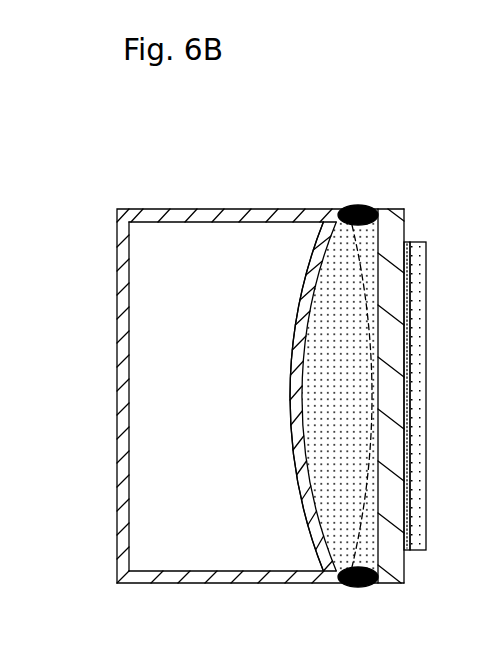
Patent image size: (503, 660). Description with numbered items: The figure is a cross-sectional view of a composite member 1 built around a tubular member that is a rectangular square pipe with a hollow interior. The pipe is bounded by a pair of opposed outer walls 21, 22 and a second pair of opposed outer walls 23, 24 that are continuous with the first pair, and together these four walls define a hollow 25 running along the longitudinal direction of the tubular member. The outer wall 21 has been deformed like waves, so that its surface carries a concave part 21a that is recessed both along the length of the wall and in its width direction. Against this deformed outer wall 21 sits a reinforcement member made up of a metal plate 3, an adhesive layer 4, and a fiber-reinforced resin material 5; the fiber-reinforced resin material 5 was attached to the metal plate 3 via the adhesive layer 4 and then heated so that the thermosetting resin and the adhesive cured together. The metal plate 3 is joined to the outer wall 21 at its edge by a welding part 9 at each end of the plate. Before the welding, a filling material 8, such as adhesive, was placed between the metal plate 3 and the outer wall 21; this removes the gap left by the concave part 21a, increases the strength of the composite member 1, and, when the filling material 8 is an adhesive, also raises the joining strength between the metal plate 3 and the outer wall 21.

The composite member 1 is at (338, 130).
The metal plate 3 is at (393, 354).
The adhesive layer 4 is at (405, 437).
The fiber-reinforced resin material 5 is at (420, 268).
The filling material 8 is at (365, 540).
The welding part 9 is at (355, 207).
The outer wall 21 is at (312, 320).
The concave part 21a is at (297, 388).
The outer wall 22 is at (122, 357).
The outer wall 23 is at (232, 213).
The outer wall 24 is at (266, 572).
The hollow 25 is at (172, 553).